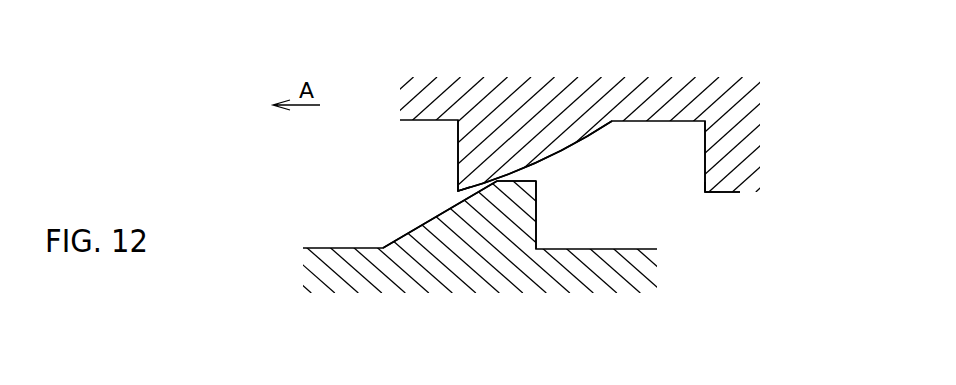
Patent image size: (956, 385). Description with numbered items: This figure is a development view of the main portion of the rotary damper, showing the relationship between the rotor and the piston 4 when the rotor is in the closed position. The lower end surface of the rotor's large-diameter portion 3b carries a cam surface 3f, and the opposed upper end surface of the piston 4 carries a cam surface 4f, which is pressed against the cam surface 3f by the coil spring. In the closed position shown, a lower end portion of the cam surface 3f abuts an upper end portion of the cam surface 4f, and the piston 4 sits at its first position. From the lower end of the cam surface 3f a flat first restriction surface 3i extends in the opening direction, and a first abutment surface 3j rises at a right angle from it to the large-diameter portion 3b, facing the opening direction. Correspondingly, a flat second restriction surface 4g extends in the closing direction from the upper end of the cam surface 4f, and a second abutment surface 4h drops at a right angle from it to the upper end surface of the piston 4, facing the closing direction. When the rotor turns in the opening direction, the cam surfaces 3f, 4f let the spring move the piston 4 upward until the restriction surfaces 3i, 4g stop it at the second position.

The large-diameter portion 3b is at (583, 100).
The cam surface 3f is at (568, 146).
The first restriction surface 3i is at (457, 193).
The first abutment surface 3j is at (457, 155).
The piston 4 is at (497, 251).
The cam surface 4f is at (413, 229).
The second restriction surface 4g is at (532, 175).
The second abutment surface 4h is at (538, 228).